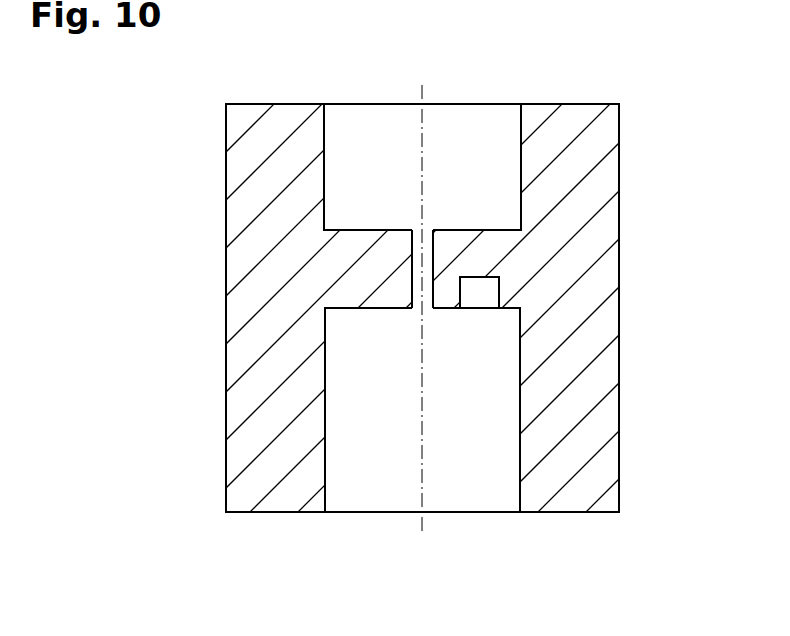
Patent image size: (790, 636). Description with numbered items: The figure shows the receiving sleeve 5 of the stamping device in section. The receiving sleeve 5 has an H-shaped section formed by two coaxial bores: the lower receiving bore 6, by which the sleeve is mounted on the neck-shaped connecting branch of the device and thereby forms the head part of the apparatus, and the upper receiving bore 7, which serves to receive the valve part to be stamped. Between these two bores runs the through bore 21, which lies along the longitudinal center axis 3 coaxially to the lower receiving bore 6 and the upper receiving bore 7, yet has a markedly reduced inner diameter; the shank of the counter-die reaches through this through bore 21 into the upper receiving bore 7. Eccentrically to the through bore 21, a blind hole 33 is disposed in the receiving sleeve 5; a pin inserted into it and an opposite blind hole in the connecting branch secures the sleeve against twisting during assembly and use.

The receiving sleeve 5 is at (607, 180).
The upper receiving bore 7 is at (326, 167).
The through bore 21 is at (415, 310).
The lower receiving bore 6 is at (326, 417).
The blind hole 33 is at (491, 297).
The longitudinal center axis 3 is at (425, 458).